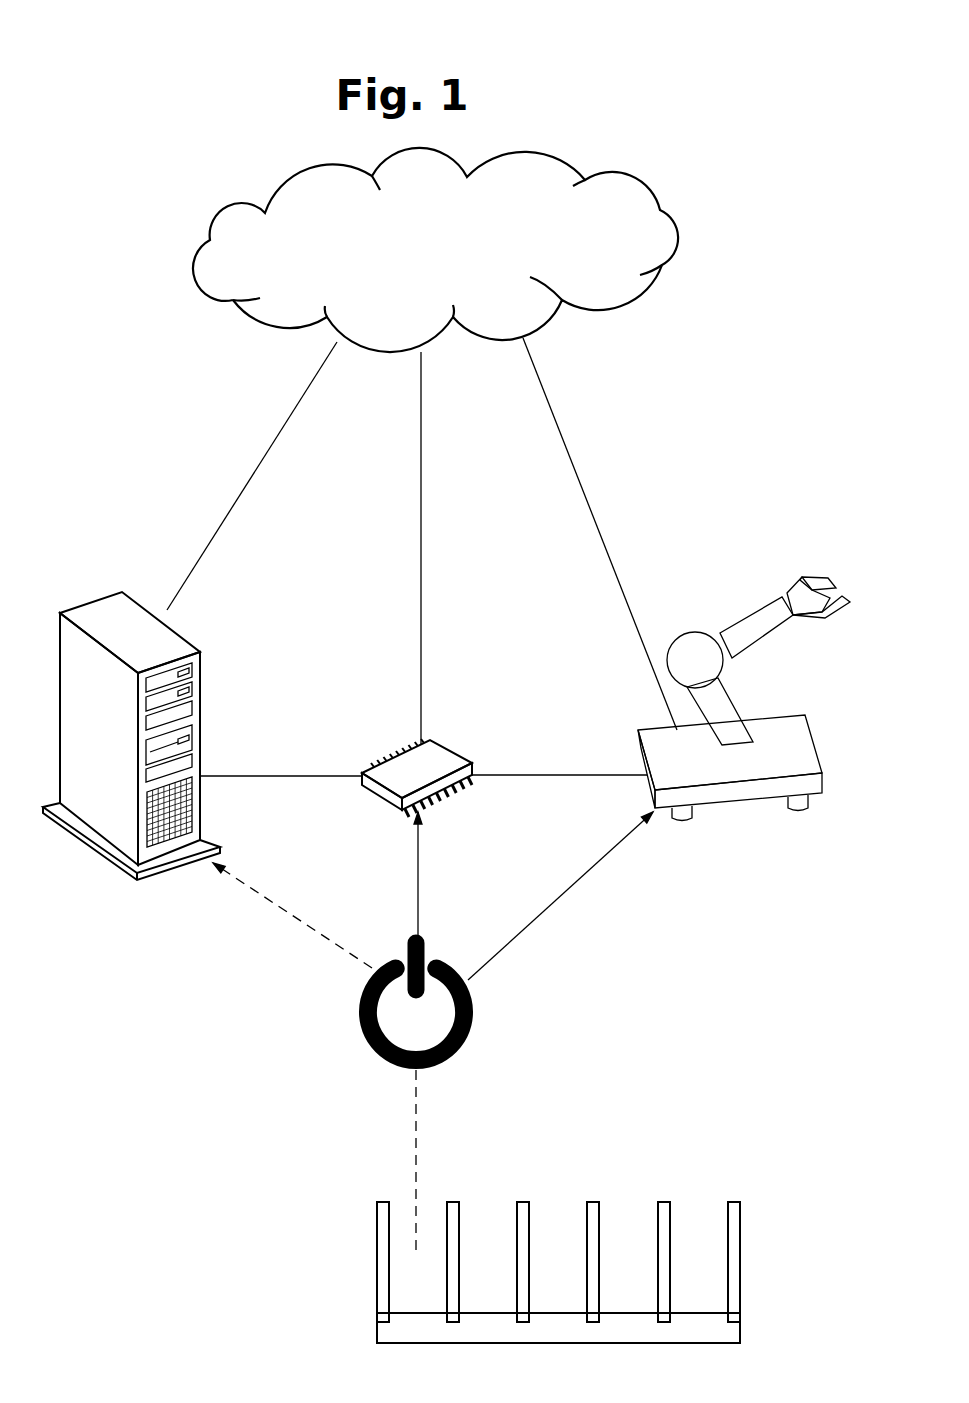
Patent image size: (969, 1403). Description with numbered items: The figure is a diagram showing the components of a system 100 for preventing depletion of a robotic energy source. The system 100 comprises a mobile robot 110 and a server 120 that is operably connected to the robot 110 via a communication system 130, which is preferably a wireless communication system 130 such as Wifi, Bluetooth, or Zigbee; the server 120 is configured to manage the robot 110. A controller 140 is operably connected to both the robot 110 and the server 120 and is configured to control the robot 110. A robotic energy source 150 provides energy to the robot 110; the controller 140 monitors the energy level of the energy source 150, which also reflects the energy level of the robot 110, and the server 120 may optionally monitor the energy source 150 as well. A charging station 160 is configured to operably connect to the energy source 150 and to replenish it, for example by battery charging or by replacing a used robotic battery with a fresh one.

The system 100 is at (713, 180).
The mobile robot 110 is at (697, 643).
The server 120 is at (102, 598).
The communication system 130 is at (195, 255).
The controller 140 is at (388, 782).
The robotic energy source 150 is at (358, 1022).
The charging station 160 is at (380, 1280).